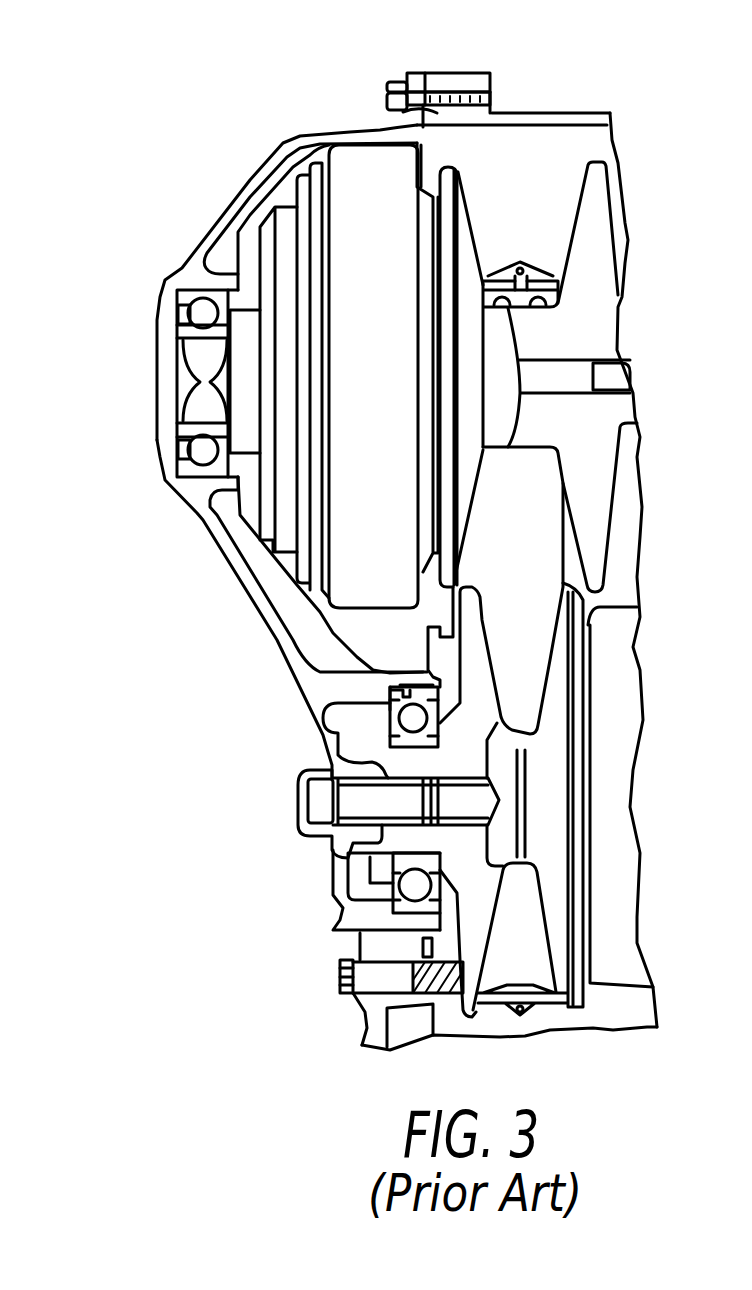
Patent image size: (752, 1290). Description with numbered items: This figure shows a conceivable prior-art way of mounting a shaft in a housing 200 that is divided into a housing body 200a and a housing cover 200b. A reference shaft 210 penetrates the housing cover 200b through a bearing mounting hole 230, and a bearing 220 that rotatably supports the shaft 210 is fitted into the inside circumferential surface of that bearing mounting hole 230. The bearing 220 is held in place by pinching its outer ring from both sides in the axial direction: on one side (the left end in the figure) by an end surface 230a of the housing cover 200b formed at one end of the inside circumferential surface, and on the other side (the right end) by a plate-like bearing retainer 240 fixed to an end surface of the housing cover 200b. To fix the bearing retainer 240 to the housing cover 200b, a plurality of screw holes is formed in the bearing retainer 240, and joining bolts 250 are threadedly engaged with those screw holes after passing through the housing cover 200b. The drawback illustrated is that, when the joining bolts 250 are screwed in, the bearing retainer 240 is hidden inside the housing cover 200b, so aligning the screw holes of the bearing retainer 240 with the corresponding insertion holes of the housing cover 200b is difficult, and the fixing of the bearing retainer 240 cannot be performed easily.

The housing 200 is at (243, 118).
The housing body 200a is at (378, 118).
The housing cover 200b is at (207, 278).
The reference shaft 210 is at (422, 842).
The bearing 220 is at (407, 728).
The bearing mounting hole 230 is at (366, 914).
The end surface 230a is at (400, 686).
The bearing retainer 240 is at (430, 652).
The joining bolts 250 is at (367, 978).